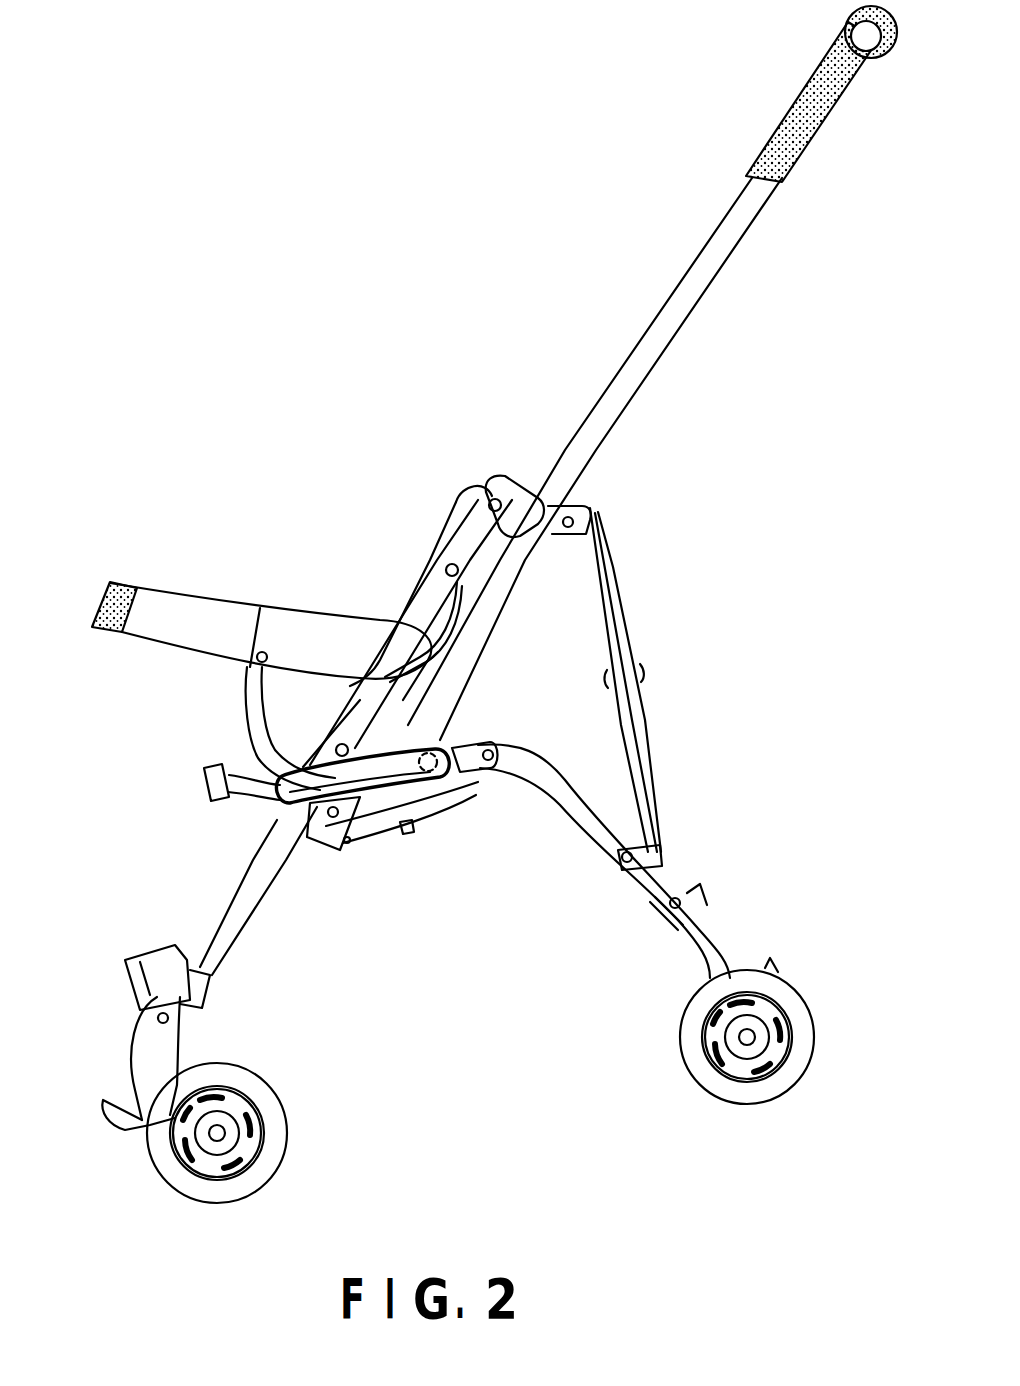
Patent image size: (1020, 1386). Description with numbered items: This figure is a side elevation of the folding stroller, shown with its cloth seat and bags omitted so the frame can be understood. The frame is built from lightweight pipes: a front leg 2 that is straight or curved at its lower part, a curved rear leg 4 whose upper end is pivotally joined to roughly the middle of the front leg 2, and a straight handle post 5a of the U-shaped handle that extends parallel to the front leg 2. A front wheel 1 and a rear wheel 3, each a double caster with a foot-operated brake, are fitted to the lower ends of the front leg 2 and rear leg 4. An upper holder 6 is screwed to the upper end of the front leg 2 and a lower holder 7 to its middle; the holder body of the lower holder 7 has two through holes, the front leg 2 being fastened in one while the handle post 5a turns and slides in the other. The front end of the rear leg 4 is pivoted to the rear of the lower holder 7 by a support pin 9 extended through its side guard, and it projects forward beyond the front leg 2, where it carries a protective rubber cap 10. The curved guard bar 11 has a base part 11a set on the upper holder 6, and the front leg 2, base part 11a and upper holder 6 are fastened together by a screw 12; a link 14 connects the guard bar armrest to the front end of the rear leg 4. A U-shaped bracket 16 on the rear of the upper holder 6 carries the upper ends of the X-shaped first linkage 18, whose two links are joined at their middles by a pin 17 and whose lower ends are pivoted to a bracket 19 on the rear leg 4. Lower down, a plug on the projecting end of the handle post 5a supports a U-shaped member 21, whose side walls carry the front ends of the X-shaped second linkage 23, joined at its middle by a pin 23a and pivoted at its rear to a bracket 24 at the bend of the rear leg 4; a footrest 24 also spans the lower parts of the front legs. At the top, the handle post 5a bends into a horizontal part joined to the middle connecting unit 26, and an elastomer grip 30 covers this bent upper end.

The front wheel 1 is at (288, 1125).
The front leg 2 is at (205, 905).
The rear wheel 3 is at (688, 1050).
The rear leg 4 is at (592, 830).
The straight handle post 5a is at (586, 456).
The upper holder 6 is at (556, 500).
The lower holder 7 is at (420, 745).
The pivot shaft 9 is at (450, 745).
The protective rubber cap 10 is at (204, 786).
The guard bar 11 is at (318, 600).
The base part 11a is at (456, 545).
The screw 12 is at (490, 503).
The link 14 is at (248, 715).
The U-shaped bracket 16 is at (588, 504).
The pin 17 is at (644, 668).
The first linkage 18 is at (630, 628).
The bracket 19 is at (664, 857).
The U-shaped member 21 is at (346, 852).
The second linkage 23 is at (400, 838).
The pin 23a is at (414, 836).
The footrest 24 is at (492, 772).
The middle connecting unit 26 is at (881, 66).
The grip 30 is at (770, 122).